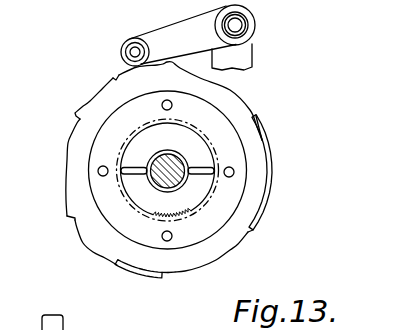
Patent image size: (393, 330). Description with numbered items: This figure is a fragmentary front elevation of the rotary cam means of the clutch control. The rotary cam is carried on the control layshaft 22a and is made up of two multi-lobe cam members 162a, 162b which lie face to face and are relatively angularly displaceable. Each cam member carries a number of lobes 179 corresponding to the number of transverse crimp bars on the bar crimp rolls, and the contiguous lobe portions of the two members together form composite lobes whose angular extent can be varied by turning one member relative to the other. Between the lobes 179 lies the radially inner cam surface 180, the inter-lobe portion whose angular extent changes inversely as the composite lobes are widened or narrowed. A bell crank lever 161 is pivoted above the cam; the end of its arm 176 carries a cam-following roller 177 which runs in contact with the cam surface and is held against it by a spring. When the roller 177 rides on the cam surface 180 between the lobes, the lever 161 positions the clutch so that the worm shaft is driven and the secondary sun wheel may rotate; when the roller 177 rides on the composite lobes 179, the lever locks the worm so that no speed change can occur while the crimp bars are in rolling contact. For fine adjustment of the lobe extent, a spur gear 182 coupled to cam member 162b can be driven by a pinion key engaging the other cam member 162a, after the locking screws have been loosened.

The control layshaft 22a is at (176, 162).
The bell crank lever 161 is at (256, 36).
The multi-lobe cam member 162a is at (87, 140).
The multi-lobe cam member 162b is at (100, 88).
The arm 176 is at (172, 40).
The cam-following roller 177 is at (124, 41).
The lobes 179 is at (88, 243).
The cam surface 180 is at (232, 90).
The spur gear 182 is at (182, 219).